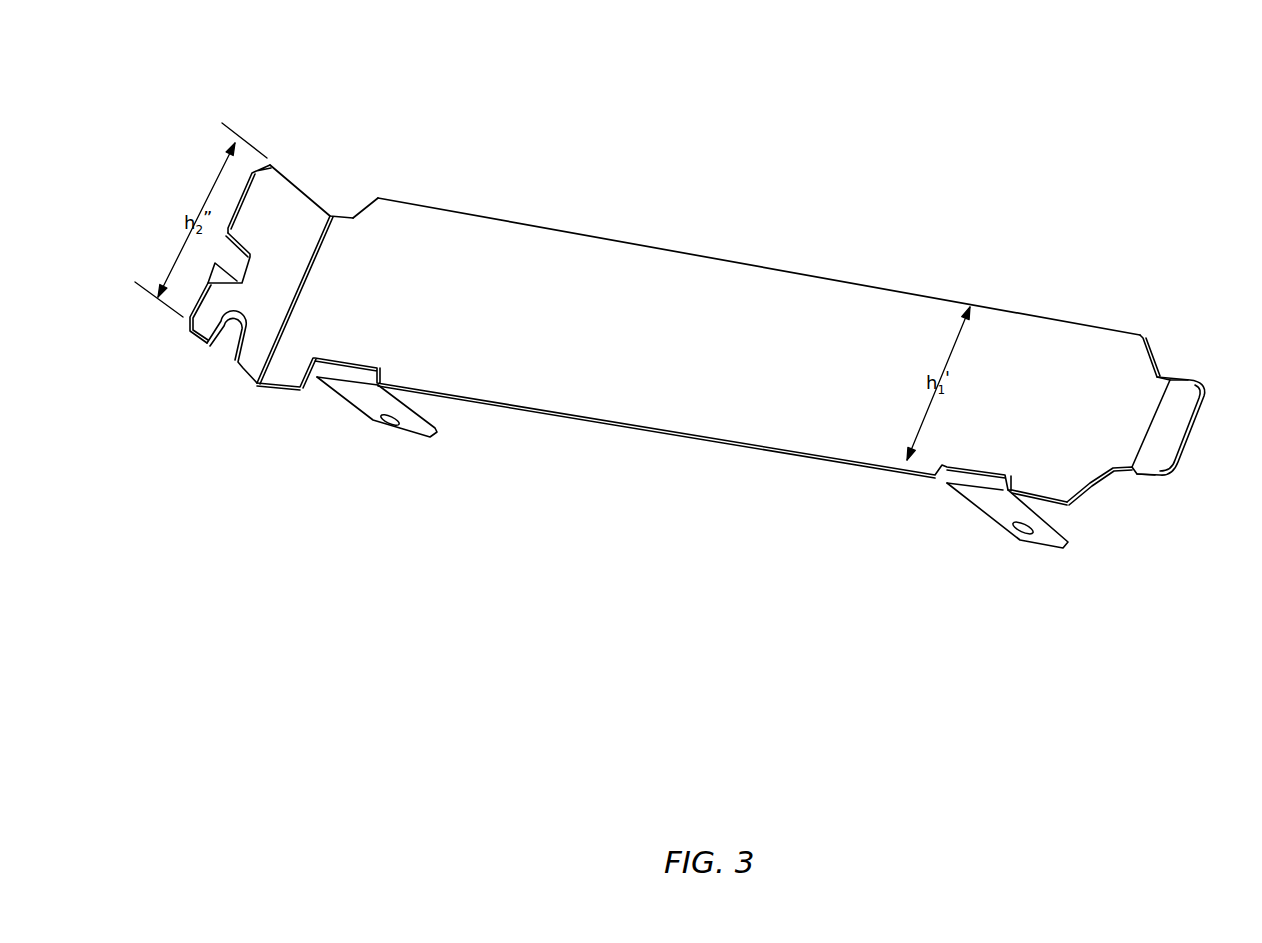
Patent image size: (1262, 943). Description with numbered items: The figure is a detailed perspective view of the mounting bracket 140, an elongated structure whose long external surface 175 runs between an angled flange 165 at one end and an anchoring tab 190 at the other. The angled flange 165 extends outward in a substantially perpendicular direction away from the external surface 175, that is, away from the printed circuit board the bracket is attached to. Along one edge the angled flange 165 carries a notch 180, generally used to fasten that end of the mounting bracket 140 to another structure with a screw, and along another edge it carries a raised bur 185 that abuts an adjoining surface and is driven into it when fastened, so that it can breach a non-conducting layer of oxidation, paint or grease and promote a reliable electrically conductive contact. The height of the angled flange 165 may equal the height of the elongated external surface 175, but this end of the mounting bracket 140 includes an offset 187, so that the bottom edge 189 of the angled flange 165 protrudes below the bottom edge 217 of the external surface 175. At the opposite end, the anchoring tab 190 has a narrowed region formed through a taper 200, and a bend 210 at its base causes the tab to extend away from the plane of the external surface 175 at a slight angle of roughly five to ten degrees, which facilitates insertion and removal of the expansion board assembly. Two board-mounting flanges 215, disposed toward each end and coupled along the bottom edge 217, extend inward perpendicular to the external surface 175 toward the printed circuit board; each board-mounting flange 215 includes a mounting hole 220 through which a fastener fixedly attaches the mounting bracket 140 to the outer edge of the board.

The mounting bracket 140 is at (690, 347).
The angled flange 165 is at (310, 195).
The external surface 175 is at (818, 310).
The raised bur 185 is at (245, 226).
The offset 187 is at (360, 210).
The bottom edge of the angled flange 189 is at (195, 337).
The notch 180 is at (228, 355).
The taper 200 is at (1157, 376).
The bend 210 is at (1173, 378).
The anchoring tab 190 is at (1155, 477).
The board-mounting flanges 215 is at (420, 442).
The bottom edge 217 is at (660, 433).
The mounting hole 220 is at (388, 427).